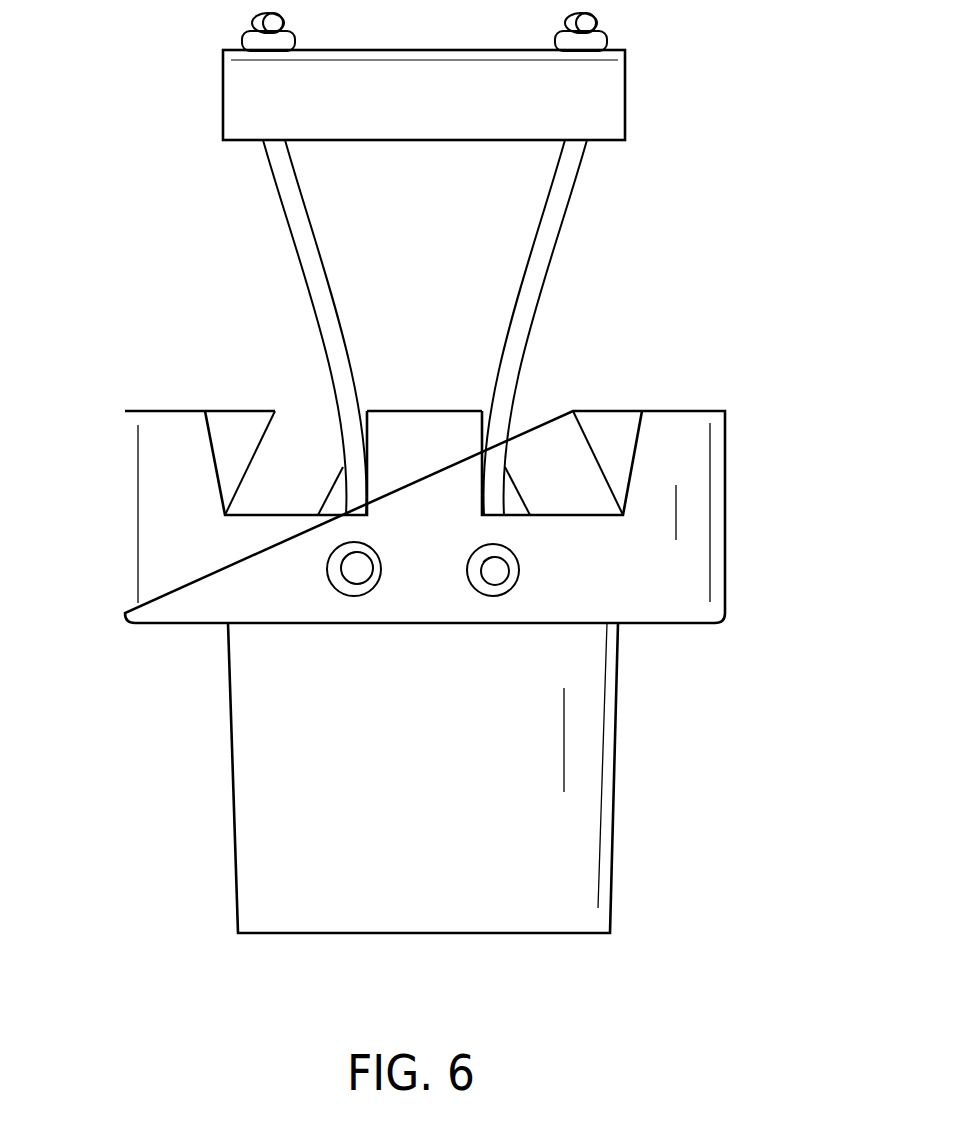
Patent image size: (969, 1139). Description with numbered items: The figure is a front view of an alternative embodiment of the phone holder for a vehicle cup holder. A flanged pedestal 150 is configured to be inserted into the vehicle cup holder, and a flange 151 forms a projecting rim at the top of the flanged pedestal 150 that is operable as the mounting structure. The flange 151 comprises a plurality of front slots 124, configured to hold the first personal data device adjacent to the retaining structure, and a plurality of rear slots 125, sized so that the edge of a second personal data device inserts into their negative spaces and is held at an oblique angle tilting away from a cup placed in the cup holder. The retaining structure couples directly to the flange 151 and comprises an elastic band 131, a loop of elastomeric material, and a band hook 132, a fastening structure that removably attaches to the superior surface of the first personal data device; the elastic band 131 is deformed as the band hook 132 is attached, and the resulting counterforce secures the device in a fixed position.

The plurality of front slots 124 is at (262, 515).
The plurality of rear slots 125 is at (257, 447).
The elastic band 131 is at (302, 202).
The band hook 132 is at (622, 73).
The flanged pedestal 150 is at (592, 760).
The flange 151 is at (725, 510).